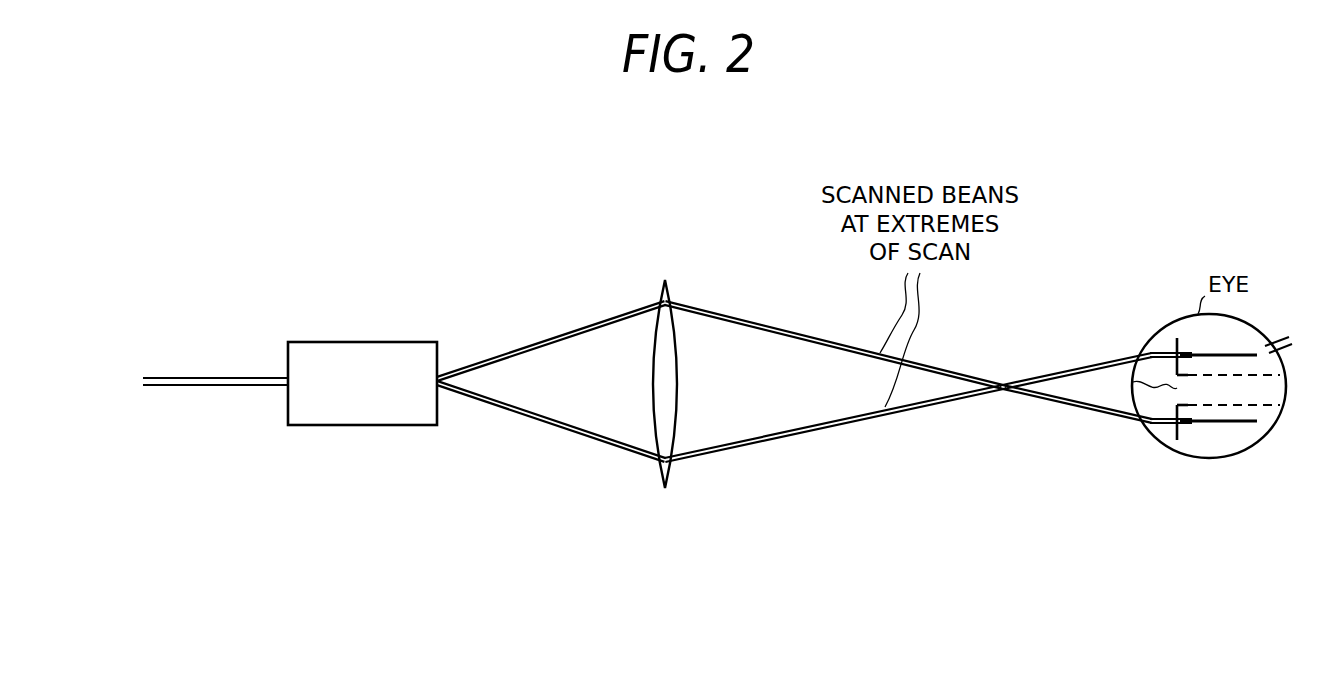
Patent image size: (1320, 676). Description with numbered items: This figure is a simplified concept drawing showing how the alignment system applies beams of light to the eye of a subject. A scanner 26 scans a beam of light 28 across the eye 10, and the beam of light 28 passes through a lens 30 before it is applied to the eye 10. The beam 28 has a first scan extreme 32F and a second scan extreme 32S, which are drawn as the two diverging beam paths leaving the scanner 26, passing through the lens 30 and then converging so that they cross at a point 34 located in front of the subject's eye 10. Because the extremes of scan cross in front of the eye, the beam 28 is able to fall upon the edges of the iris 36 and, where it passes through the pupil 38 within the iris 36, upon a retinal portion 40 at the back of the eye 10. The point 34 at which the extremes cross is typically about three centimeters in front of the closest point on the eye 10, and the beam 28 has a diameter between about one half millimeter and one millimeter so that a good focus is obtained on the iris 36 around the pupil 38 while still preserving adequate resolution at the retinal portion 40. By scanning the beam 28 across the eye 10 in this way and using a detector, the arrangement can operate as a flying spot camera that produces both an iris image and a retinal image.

The eye 10 is at (1263, 438).
The scanner 26 is at (377, 407).
The beam of light 28 is at (1060, 407).
The lens 30 is at (677, 393).
The second scan extreme 32S is at (753, 323).
The first scan extreme 32F is at (722, 447).
The crossing point 34 is at (1003, 385).
The iris 36 is at (1163, 433).
The pupil 38 is at (1127, 345).
The retinal portion 40 is at (1277, 390).